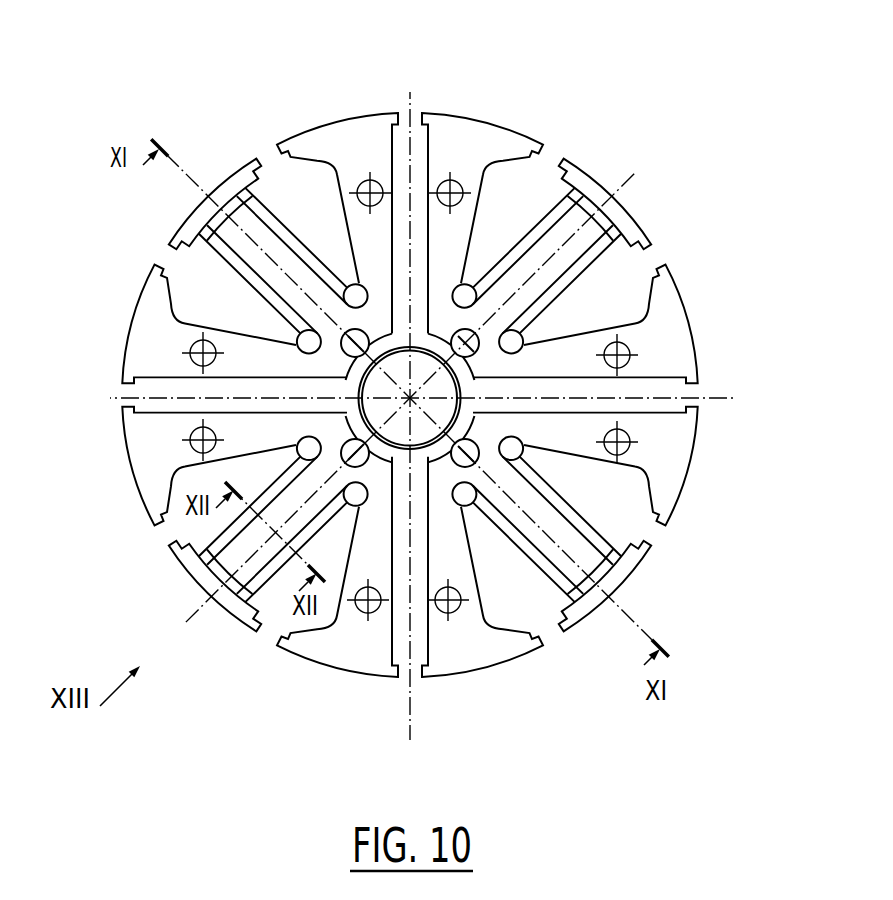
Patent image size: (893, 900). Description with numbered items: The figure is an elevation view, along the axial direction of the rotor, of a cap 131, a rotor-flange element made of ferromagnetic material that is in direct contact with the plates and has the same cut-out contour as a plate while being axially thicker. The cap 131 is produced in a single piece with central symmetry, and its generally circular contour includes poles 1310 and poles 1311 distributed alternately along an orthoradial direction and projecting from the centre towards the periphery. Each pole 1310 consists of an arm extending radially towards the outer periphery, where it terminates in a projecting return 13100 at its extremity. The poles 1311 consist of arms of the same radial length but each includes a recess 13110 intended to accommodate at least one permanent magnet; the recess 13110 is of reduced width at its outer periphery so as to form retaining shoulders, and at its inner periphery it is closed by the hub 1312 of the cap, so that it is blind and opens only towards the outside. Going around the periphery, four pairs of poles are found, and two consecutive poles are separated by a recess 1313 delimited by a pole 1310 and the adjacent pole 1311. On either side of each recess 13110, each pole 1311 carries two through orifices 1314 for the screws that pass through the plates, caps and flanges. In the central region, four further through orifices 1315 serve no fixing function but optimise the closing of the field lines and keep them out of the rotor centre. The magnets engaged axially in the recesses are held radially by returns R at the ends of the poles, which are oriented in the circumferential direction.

The cap 131 is at (430, 100).
The pole 1310 is at (270, 245).
The projecting return 13100 is at (233, 182).
The pole 1311 is at (357, 150).
The recess 13110 is at (420, 228).
The hub 1312 is at (388, 455).
The recess 1313 is at (603, 297).
The through orifice 1314 is at (520, 225).
The through orifice 1315 is at (474, 348).
The return R is at (521, 655).